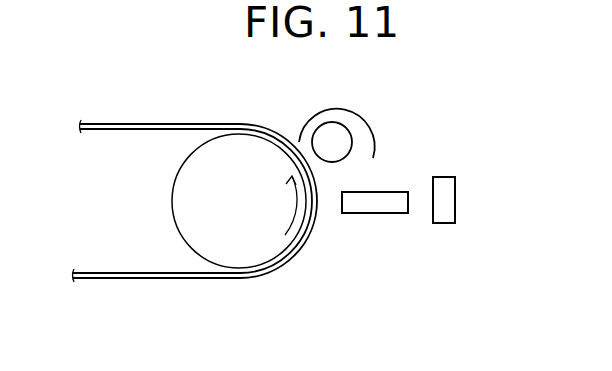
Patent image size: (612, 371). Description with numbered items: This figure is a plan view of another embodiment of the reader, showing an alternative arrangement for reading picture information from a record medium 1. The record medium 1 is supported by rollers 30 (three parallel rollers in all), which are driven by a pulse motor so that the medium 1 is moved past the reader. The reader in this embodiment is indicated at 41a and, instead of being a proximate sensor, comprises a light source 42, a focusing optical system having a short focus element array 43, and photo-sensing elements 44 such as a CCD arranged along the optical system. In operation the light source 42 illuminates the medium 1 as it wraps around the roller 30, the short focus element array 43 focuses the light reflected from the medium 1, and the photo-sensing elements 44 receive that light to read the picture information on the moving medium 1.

The record medium 1 is at (163, 124).
The roller 30 is at (262, 253).
The light source 42 is at (330, 133).
The shield 41a is at (398, 122).
The short focus element array 43 is at (370, 203).
The photo-sensing elements 44 is at (455, 195).